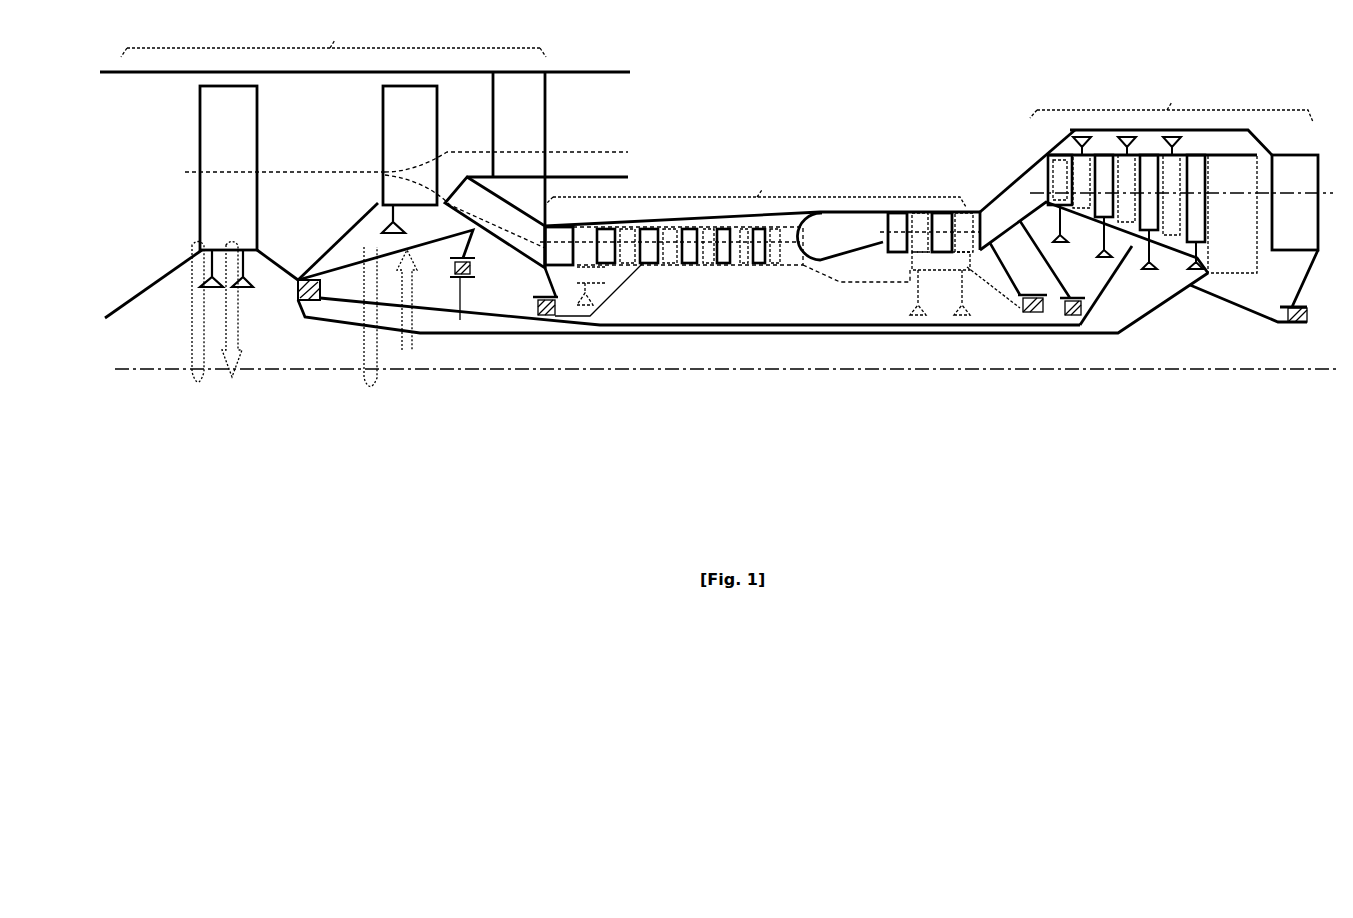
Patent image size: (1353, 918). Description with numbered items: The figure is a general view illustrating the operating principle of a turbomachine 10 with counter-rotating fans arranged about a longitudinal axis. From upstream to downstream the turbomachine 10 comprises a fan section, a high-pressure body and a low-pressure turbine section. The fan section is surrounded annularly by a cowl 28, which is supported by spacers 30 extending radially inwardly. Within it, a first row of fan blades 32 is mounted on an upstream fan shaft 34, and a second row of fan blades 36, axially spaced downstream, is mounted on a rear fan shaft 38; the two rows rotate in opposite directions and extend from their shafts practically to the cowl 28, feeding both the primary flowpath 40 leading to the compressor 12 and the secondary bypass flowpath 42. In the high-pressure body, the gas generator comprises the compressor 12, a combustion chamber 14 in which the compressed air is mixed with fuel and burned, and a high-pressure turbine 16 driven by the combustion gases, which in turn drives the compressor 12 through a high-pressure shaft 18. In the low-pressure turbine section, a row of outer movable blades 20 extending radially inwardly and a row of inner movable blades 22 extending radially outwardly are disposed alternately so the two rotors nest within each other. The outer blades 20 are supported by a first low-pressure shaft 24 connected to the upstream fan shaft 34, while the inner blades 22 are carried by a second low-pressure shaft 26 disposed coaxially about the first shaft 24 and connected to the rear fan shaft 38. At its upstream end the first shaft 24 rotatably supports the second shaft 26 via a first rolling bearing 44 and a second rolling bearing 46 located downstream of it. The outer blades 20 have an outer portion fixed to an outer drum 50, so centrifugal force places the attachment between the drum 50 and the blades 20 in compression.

The turbomachine 10 is at (817, 157).
The compressor 12 is at (710, 276).
The combustion chamber 14 is at (820, 225).
The high-pressure turbine 16 is at (903, 260).
The high-pressure shaft 18 is at (845, 287).
The outer movable blades 20 is at (1173, 232).
The inner movable blades 22 is at (1193, 150).
The first low-pressure shaft 24 is at (1112, 335).
The second low-pressure shaft 26 is at (1000, 312).
The cowl 28 is at (433, 48).
The spacers 30 is at (517, 113).
The first row of fan blades 32 is at (233, 108).
The upstream fan shaft 34 is at (290, 290).
The second row of fan blades 36 is at (402, 148).
The rear fan shaft 38 is at (337, 242).
The primary flowpath 40 is at (517, 235).
The secondary bypass flowpath 42 is at (590, 138).
The first rolling bearing 44 is at (320, 318).
The second rolling bearing 46 is at (460, 320).
The outer drum 50 is at (1130, 150).